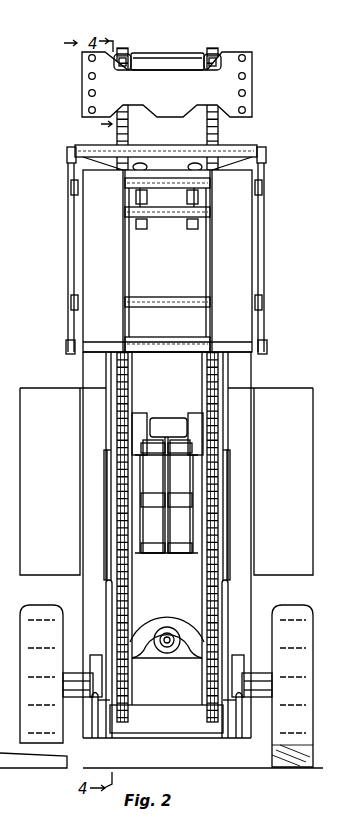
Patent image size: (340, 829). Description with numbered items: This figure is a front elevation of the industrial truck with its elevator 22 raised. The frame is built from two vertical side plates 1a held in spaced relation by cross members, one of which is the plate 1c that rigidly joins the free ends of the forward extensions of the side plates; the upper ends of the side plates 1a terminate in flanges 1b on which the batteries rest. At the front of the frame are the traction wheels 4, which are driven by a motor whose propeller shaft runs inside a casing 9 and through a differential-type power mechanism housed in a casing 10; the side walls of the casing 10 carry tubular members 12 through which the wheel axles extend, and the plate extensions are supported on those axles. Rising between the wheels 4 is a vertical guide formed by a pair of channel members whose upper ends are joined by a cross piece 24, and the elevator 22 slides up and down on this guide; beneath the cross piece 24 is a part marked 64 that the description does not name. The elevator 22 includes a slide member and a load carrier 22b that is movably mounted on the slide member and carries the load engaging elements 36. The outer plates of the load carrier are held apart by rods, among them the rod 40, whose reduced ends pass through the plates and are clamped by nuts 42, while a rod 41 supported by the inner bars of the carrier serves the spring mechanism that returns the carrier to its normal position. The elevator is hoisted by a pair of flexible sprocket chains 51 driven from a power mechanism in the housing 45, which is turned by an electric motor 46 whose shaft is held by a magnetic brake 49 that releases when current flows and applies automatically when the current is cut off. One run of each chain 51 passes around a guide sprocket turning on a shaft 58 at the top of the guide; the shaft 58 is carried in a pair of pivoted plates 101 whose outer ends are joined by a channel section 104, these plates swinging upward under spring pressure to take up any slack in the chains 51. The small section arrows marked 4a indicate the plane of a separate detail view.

The vertical side plates 1a is at (236, 576).
The flanges 1b is at (227, 570).
The cross member plate 1c is at (170, 738).
The traction wheels 4 is at (32, 608).
The section line 4a is at (77, 81).
The casing 9 is at (172, 627).
The casing 10 is at (163, 704).
The tubular members 12 is at (68, 672).
The elevator 22 is at (60, 244).
The load carrier 22b is at (167, 261).
The cross piece 24 is at (88, 80).
The load engaging elements 36 is at (92, 263).
The rod 40 is at (28, 714).
The rod 41 is at (33, 707).
The nuts 42 is at (30, 690).
The housing 45 is at (166, 485).
The electric motor 46 is at (196, 413).
The magnetic brake 49 is at (140, 413).
The sprocket chains 51 is at (128, 378).
The shaft 58 is at (170, 594).
The cross bar 64 is at (256, 155).
The plates 101 is at (119, 56).
The channel section 104 is at (164, 56).